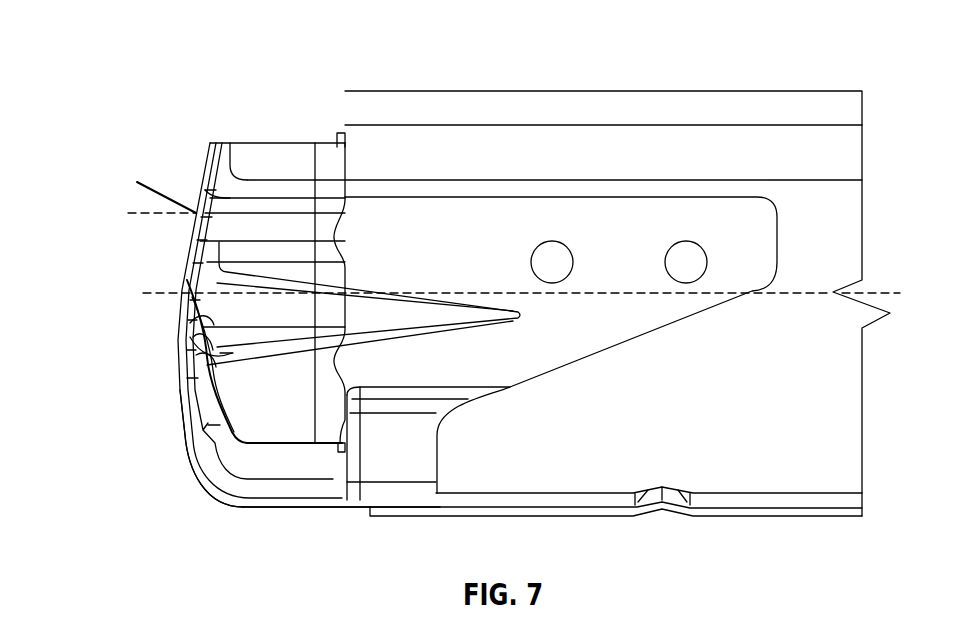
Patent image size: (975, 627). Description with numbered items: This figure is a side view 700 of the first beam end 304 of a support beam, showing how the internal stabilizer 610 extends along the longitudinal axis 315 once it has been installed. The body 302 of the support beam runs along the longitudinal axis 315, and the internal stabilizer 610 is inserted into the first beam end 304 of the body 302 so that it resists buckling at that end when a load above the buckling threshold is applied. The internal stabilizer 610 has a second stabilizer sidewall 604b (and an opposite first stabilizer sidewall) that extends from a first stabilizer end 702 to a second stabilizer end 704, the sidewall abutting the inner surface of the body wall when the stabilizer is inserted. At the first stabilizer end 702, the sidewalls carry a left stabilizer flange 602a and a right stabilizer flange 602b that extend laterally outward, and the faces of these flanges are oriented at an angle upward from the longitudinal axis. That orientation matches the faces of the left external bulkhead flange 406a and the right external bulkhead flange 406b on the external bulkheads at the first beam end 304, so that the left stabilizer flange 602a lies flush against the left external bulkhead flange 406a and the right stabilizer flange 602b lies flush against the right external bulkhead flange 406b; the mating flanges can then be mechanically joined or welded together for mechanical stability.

The side view 700 is at (168, 74).
The first stabilizer end 702 is at (213, 137).
The second stabilizer end 704 is at (344, 122).
The left stabilizer flange 602a is at (280, 287).
The right stabilizer flange 602b is at (205, 166).
The internal stabilizer 610 is at (180, 242).
The longitudinal axis 315 is at (800, 292).
The left external bulkhead flange 406a is at (177, 361).
The right external bulkhead flange 406b is at (180, 353).
The second stabilizer sidewall 604b is at (233, 351).
The first beam end 304 is at (165, 448).
The body 302 is at (843, 405).